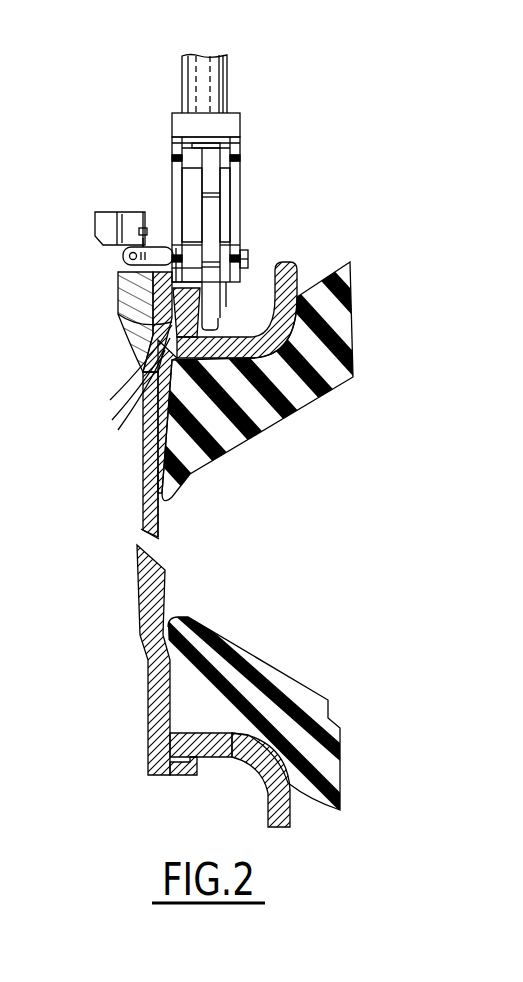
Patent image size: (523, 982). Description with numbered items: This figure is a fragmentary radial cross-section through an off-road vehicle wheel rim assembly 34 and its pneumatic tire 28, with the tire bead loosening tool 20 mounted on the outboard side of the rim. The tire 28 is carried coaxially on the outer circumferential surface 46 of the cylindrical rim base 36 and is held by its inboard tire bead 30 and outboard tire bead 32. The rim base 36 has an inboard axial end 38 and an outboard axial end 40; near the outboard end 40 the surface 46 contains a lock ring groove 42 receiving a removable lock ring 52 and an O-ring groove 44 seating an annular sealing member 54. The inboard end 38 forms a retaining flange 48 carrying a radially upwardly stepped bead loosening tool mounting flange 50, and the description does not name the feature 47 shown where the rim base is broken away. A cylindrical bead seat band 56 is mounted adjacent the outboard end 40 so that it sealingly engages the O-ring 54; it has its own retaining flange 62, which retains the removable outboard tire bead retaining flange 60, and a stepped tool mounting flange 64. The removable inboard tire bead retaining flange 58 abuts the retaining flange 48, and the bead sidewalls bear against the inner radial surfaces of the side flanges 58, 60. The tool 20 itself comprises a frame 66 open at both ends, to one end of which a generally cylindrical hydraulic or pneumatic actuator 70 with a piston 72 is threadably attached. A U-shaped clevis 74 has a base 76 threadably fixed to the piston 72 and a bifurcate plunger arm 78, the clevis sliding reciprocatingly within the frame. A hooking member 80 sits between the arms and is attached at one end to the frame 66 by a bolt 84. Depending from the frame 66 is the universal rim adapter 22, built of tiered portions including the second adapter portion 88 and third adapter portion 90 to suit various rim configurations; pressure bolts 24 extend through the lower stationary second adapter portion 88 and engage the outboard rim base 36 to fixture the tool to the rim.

The tire bead loosening tool 20 is at (130, 72).
The universal rim adapter 22 is at (46, 192).
The pressure bolts 24 is at (143, 226).
The pneumatic tire 28 is at (378, 259).
The inboard tire bead 30 is at (328, 767).
The outboard tire bead 32 is at (348, 322).
The wheel rim assembly 34 is at (84, 582).
The cylindrical rim base 36 is at (142, 472).
The inboard axial end 38 is at (150, 780).
The outboard axial end 40 is at (122, 262).
The lock ring groove 42 is at (118, 283).
The O-ring groove 44 is at (118, 316).
The outer circumferential surface 46 is at (160, 526).
The wall end 47 is at (142, 511).
The retaining flange 48 is at (177, 758).
The bead loosening tool mounting flange 50 is at (193, 770).
The lock ring 52 is at (150, 300).
The annular sealing member 54 is at (147, 350).
The cylindrical bead seat band 56 is at (141, 427).
The inboard tire bead retaining flange 58 is at (288, 825).
The outboard tire bead retaining flange 60 is at (288, 262).
The retaining flange 62 is at (143, 363).
The tool mounting flange 64 is at (210, 319).
The frame 66 is at (228, 120).
The actuator 70 is at (223, 74).
The piston 72 is at (228, 140).
The clevis 74 is at (211, 203).
The base 76 is at (217, 162).
The plunger arm 78 is at (210, 296).
The hooking member 80 is at (143, 383).
The bolt 84 is at (248, 256).
The second adapter portion 88 is at (157, 248).
The third adapter portion 90 is at (110, 214).